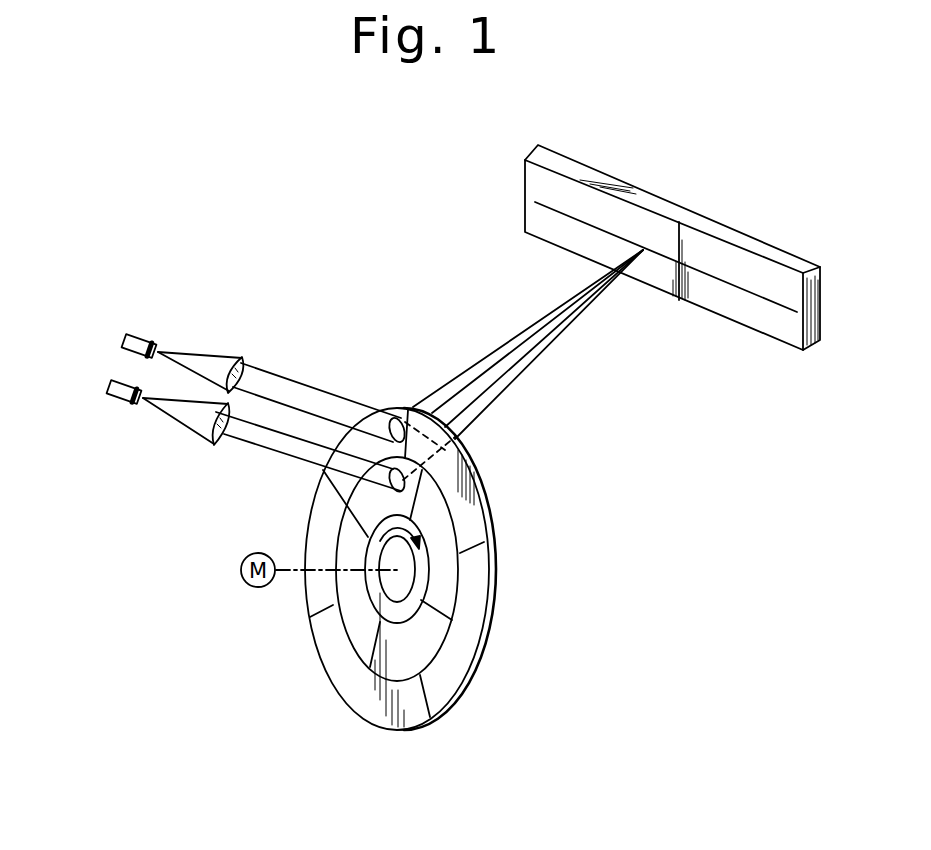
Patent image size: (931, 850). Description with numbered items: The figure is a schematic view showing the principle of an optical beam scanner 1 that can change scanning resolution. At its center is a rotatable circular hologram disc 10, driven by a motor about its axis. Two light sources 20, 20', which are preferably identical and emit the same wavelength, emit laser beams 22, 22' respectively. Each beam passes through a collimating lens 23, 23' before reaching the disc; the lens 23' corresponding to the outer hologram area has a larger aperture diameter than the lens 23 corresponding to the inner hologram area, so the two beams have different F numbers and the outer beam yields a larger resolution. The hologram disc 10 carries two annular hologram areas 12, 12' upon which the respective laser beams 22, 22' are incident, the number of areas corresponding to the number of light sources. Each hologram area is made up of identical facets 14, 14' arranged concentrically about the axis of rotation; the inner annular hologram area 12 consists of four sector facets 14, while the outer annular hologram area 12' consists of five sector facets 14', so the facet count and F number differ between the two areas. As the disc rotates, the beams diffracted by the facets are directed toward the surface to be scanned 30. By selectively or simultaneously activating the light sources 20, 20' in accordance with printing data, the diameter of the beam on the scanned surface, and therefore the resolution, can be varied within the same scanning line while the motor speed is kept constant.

The optical scanning apparatus 1 is at (604, 567).
The hologram disc 10 is at (305, 651).
The inner annular hologram area 12 is at (426, 563).
The outer annular hologram area 12' is at (505, 481).
The facets 14 is at (333, 688).
The facets 14' is at (404, 692).
The light source 20 is at (122, 424).
The light source 20' is at (150, 320).
The laser beam 22 is at (311, 458).
The laser beam 22' is at (320, 392).
The lens 23 is at (186, 450).
The lens 23' is at (216, 346).
The reflector / scanned surface 30 is at (541, 202).